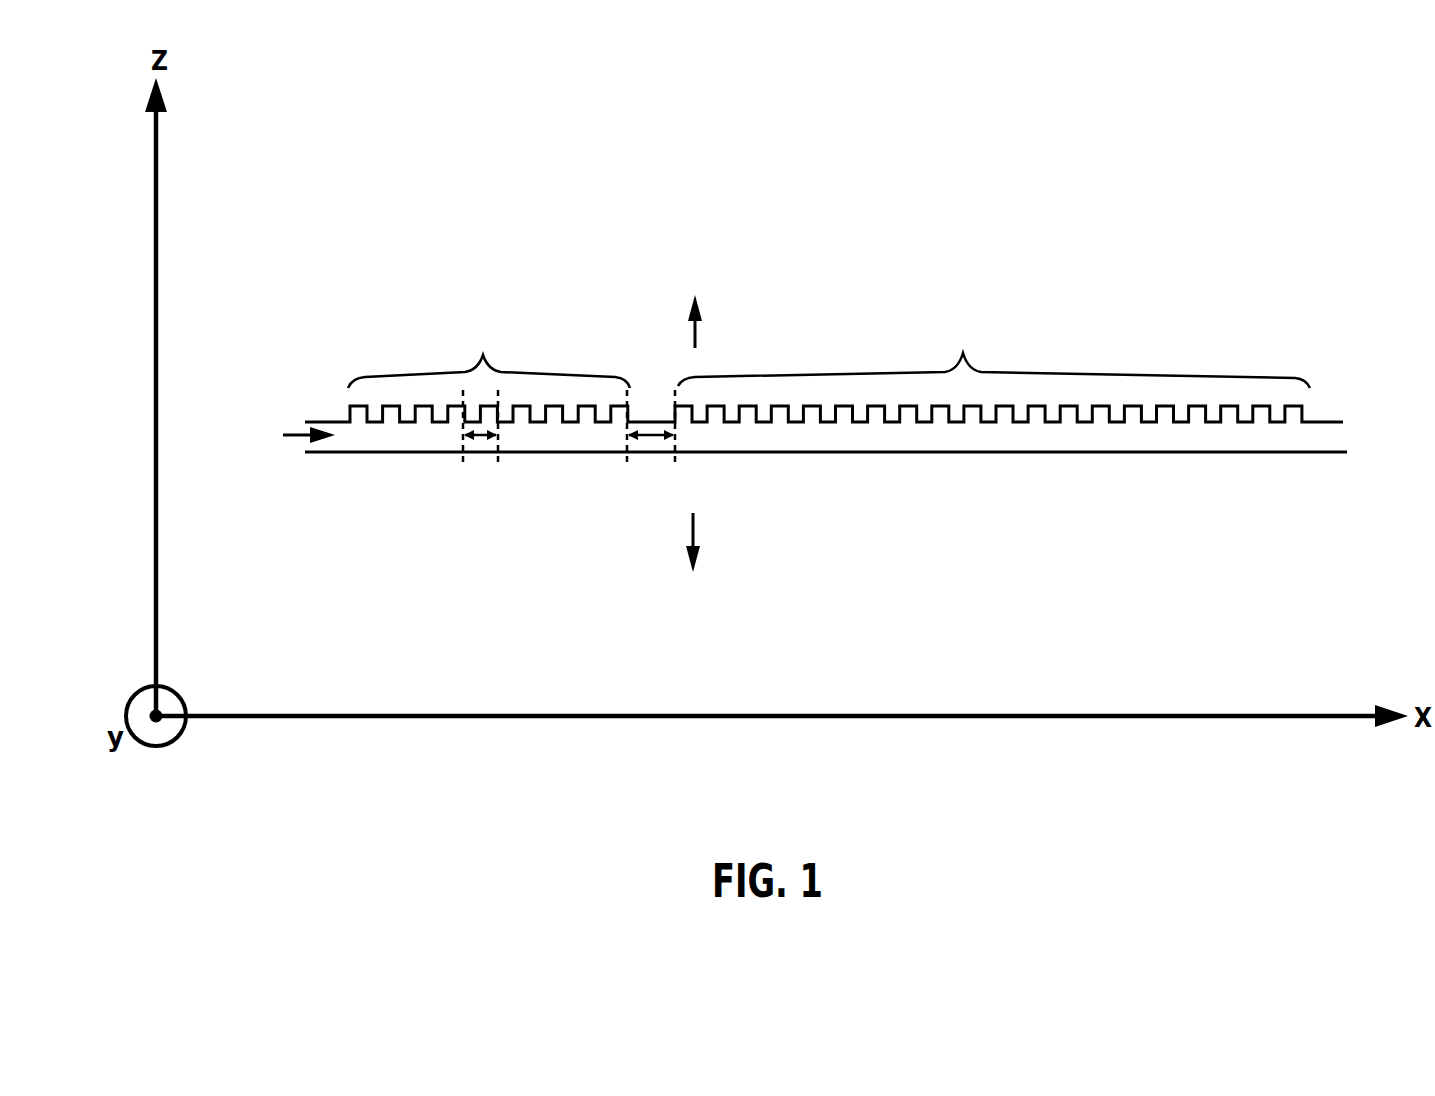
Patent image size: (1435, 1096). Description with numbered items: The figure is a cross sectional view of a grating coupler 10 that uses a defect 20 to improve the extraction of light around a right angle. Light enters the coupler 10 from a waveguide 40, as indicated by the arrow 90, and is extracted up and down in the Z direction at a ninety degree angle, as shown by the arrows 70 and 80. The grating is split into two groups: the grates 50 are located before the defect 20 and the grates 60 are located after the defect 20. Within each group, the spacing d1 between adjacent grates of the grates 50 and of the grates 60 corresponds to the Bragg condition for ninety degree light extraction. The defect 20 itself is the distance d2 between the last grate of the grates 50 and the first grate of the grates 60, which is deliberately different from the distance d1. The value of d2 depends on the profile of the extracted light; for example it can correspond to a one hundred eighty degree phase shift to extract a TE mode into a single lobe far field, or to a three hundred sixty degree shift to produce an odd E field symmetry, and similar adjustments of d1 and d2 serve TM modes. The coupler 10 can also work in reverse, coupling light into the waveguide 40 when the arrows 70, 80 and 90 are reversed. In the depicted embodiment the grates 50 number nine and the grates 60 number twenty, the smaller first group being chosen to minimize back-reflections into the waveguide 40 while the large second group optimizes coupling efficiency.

The coupler 10 is at (1166, 504).
The defect 20 is at (653, 445).
The waveguide 40 is at (305, 422).
The grates 50 is at (489, 356).
The grates 60 is at (994, 355).
The arrow 70 is at (697, 328).
The arrow 80 is at (695, 537).
The arrow 90 is at (303, 437).
The distance d1 is at (480, 442).
The distance d2 is at (655, 423).